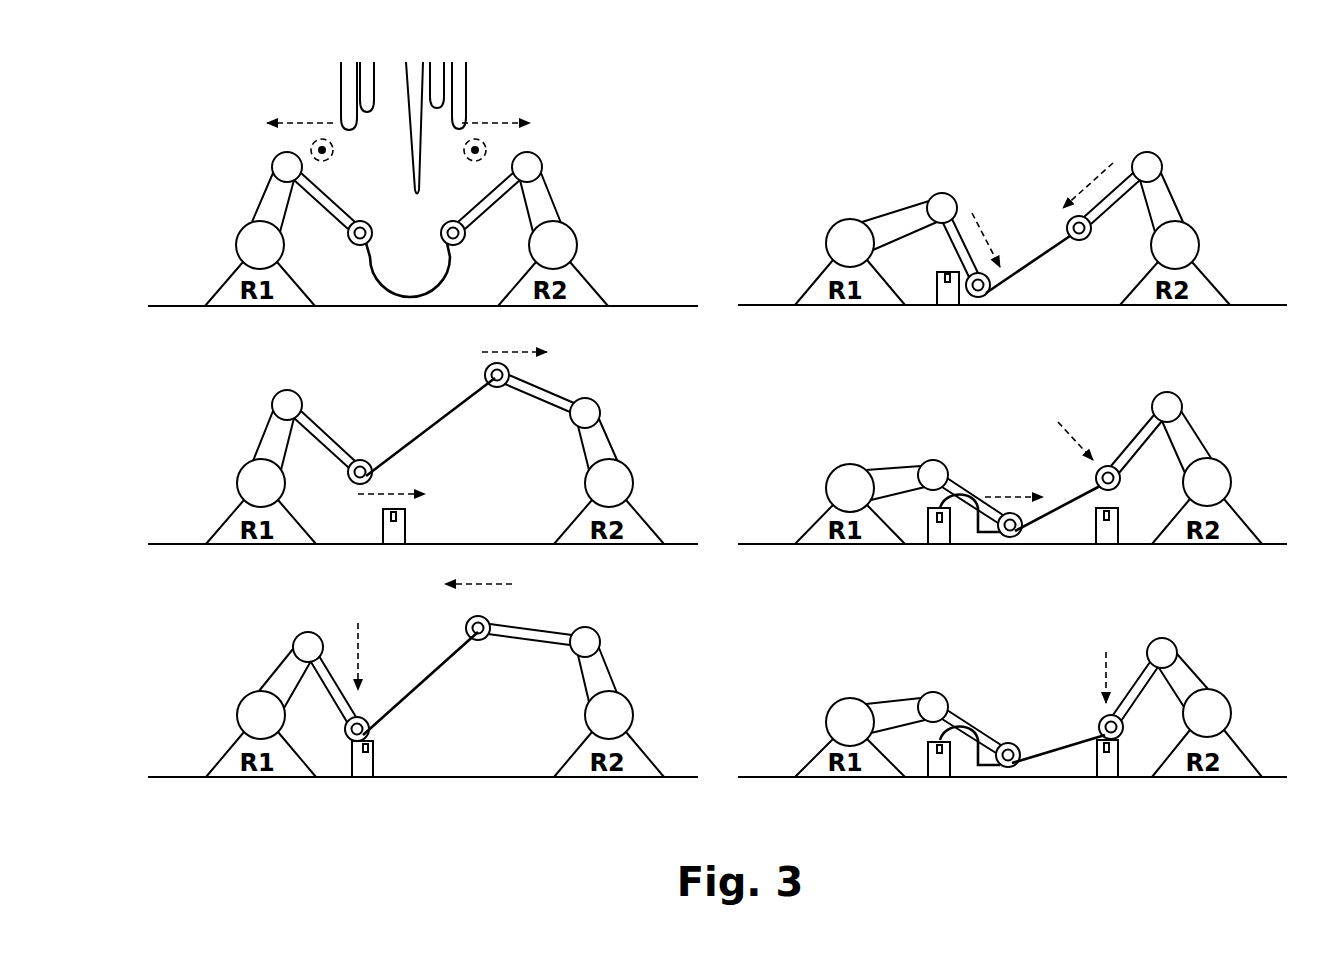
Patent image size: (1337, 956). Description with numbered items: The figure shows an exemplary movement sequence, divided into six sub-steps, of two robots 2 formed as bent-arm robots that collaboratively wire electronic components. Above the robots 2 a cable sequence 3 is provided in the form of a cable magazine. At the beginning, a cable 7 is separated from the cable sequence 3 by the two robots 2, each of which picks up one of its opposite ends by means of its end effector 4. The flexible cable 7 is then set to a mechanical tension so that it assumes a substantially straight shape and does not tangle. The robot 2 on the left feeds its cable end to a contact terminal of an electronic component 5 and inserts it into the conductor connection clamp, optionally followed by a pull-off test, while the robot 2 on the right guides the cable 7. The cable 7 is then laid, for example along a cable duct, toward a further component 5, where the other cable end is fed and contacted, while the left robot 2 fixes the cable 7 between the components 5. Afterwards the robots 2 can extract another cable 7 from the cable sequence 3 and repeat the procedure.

The robot 2 is at (237, 195).
The cable sequence 3 is at (320, 78).
The end effector 4 is at (368, 455).
The electronic component 5 is at (397, 530).
The cable 7 is at (373, 112).